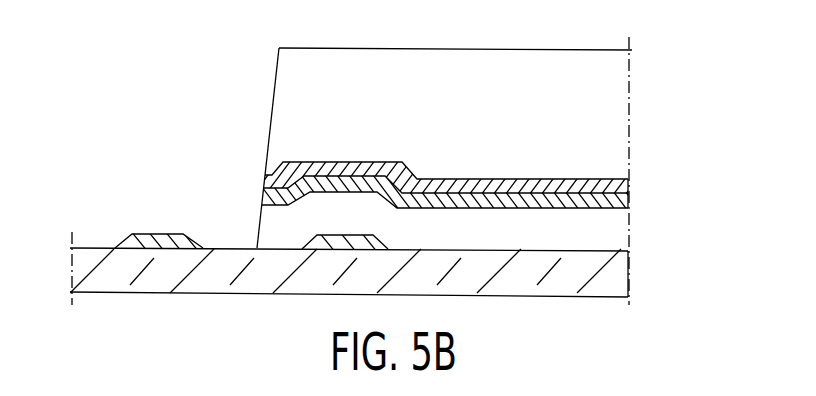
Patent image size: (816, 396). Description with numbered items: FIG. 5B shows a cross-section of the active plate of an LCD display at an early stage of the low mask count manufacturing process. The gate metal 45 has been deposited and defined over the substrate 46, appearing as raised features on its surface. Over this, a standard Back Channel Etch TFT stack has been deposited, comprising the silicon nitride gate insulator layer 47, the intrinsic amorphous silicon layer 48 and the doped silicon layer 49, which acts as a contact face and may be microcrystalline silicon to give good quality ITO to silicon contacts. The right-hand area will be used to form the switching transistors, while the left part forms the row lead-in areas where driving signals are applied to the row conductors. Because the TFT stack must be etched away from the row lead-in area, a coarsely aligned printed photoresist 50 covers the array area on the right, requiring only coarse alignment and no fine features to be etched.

The gate metal 45 is at (165, 235).
The substrate 46 is at (620, 275).
The silicon nitride gate insulator layer 47 is at (618, 235).
The amorphous silicon layer 48 is at (620, 203).
The doped silicon layer 49 is at (630, 183).
The coarsely aligned printed photoresist 50 is at (622, 115).